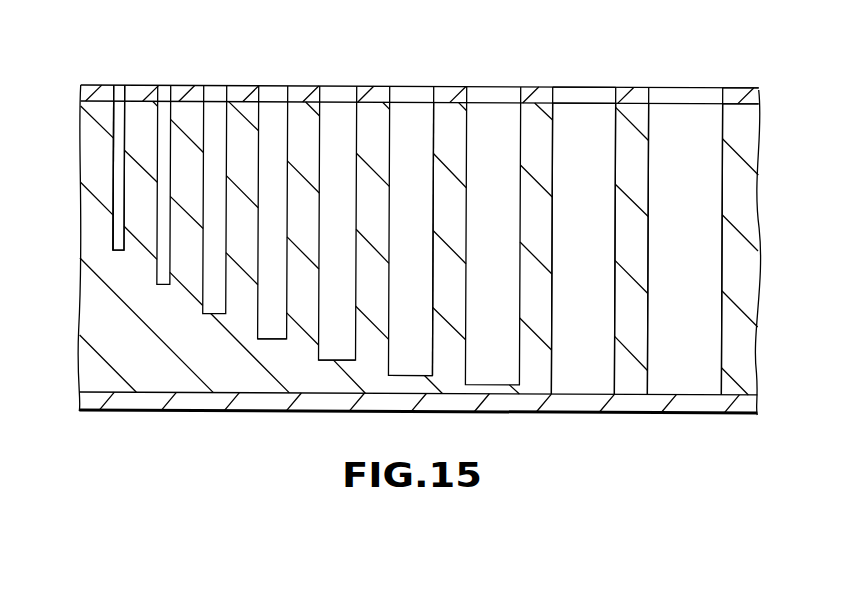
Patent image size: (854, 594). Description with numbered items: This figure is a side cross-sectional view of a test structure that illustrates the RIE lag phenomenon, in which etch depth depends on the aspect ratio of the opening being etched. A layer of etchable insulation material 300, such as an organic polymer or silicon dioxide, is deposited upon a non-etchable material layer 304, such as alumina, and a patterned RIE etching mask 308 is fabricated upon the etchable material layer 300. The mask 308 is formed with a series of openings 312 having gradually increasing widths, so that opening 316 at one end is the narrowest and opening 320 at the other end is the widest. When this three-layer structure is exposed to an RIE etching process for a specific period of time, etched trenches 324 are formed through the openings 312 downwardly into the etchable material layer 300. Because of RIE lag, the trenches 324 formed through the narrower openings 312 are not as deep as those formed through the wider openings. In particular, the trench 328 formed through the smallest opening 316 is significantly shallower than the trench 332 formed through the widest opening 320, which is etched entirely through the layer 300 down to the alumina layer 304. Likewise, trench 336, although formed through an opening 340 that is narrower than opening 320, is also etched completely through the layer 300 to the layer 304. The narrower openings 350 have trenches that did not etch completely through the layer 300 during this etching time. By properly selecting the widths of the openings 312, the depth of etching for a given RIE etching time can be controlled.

The etchable insulation material layer 300 is at (78, 217).
The non-etchable material layer 304 is at (78, 397).
The RIE etching mask 308 is at (80, 92).
The openings 312 is at (692, 50).
The narrowest opening 316 is at (117, 84).
The widest opening 320 is at (700, 90).
The etched trenches 324 is at (273, 328).
The trench formed through smallest opening 328 is at (117, 182).
The trench formed through widest opening 332 is at (698, 288).
The trench 336 is at (585, 365).
The opening 340 is at (578, 90).
The narrower openings 350 is at (425, 333).